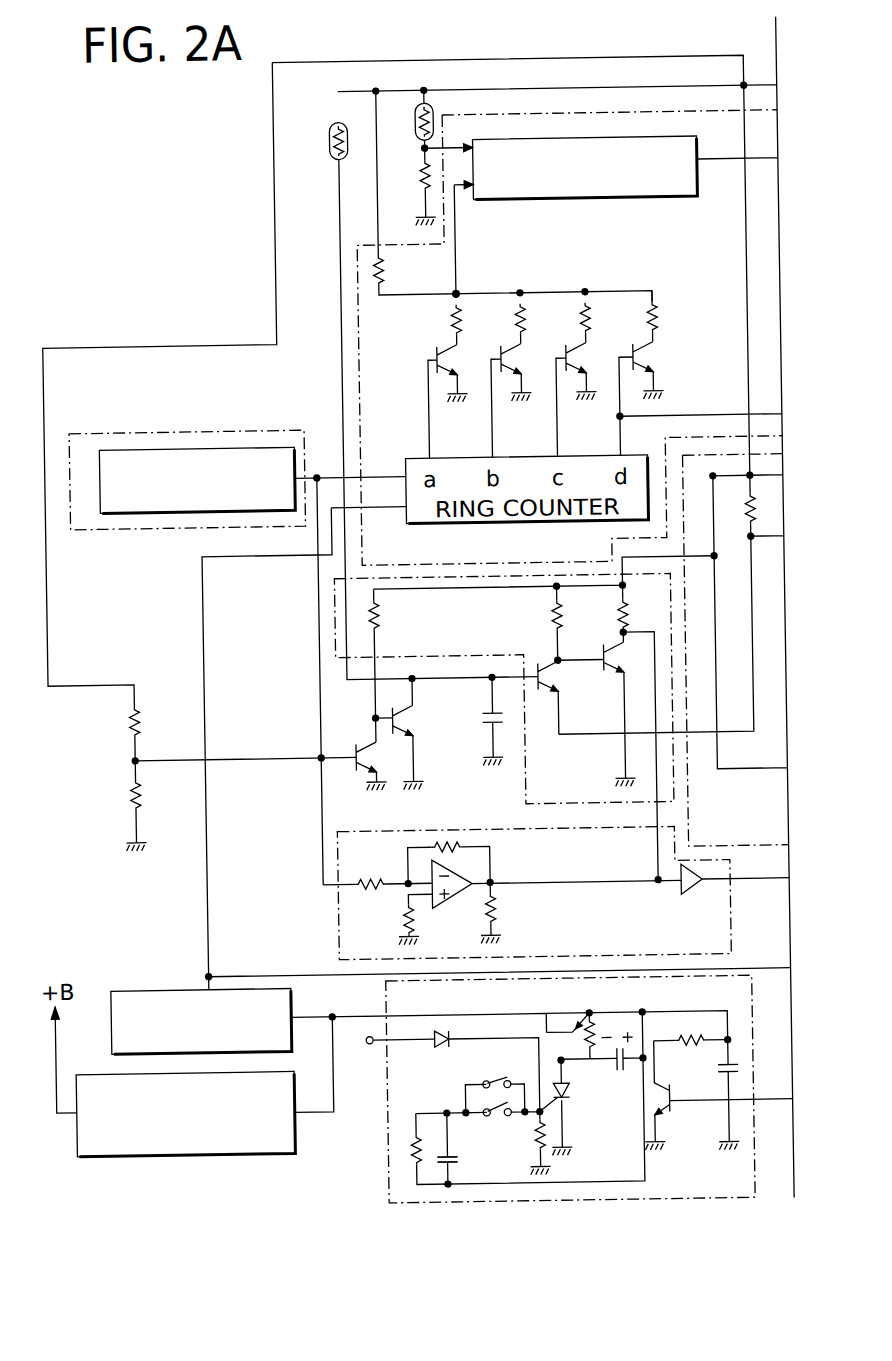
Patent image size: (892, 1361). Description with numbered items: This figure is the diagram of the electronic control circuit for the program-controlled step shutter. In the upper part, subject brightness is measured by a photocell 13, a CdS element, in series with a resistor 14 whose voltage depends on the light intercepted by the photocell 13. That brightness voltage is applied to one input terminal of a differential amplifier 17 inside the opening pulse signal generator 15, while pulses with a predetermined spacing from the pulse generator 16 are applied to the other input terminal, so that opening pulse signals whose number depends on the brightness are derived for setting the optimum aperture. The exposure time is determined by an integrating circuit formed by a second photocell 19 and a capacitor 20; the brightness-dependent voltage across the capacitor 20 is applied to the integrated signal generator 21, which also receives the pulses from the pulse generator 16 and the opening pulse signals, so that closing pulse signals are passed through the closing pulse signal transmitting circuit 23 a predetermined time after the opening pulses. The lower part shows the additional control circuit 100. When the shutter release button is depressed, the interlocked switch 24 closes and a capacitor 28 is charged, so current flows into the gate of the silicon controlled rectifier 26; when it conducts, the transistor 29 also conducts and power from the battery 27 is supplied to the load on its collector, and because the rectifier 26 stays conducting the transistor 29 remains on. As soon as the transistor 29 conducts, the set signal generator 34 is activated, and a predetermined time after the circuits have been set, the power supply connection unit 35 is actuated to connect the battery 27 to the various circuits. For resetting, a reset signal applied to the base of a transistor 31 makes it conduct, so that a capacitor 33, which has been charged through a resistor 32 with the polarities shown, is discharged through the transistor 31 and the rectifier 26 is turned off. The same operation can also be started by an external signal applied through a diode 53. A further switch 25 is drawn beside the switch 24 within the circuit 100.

The photocell 13 is at (427, 129).
The resistor 14 is at (427, 171).
The opening pulse signal generator 15 is at (585, 110).
The pulse generator 16 is at (291, 427).
The differential amplifier 17 is at (636, 201).
The photocell 19 is at (339, 140).
The capacitor 20 is at (482, 713).
The integrated signal generator 21 is at (525, 791).
The closing pulse signal transmitting circuit 23 is at (727, 892).
The switch 24 is at (490, 1123).
The switch 25 is at (493, 1082).
The silicon controlled rectifier 26 is at (560, 1100).
The battery 27 is at (734, 1073).
The capacitor 28 is at (452, 1158).
The transistor 29 is at (557, 1027).
The transistor 31 is at (661, 1117).
The resistor 32 is at (683, 1049).
The capacitor 33 is at (611, 1073).
The set signal generator 34 is at (161, 986).
The power supply connection unit 35 is at (166, 1151).
The diode 53 is at (434, 1050).
The additional control circuit 100 is at (380, 1130).